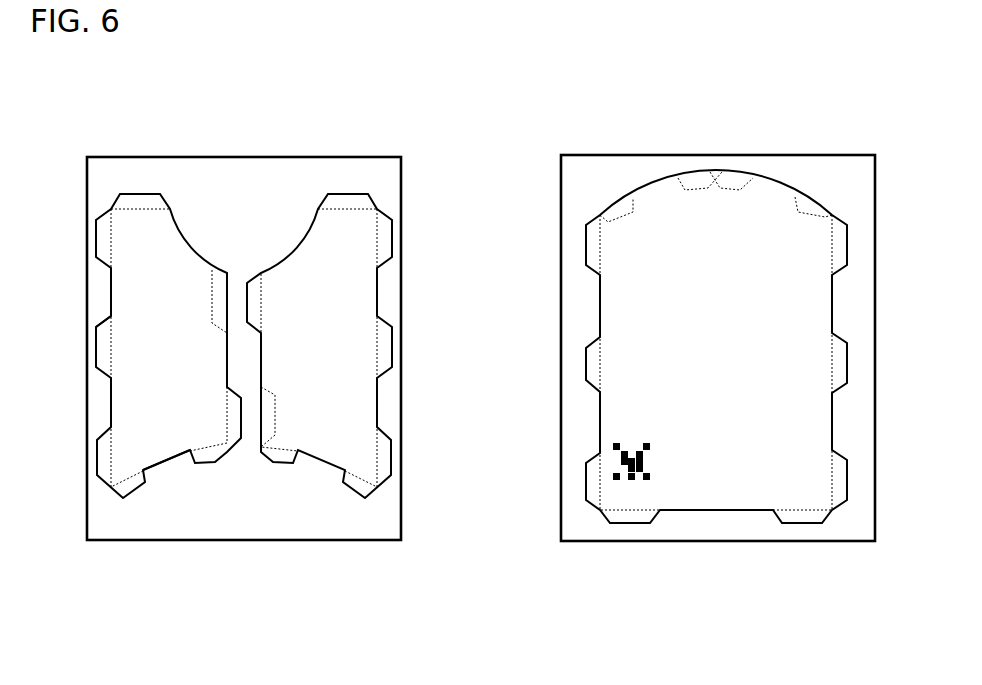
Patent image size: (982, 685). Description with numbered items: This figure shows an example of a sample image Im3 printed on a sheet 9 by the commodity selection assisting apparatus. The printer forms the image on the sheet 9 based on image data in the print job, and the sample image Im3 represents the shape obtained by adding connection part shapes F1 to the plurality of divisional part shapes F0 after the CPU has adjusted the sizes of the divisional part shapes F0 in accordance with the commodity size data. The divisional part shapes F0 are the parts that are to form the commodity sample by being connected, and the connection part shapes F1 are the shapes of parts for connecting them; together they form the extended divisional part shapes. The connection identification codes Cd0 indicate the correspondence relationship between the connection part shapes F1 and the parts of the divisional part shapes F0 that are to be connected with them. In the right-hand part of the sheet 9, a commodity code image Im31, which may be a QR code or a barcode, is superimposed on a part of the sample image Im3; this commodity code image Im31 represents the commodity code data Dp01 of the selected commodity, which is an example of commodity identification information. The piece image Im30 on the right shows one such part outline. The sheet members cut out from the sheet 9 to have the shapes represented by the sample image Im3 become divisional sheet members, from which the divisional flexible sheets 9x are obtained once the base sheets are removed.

The sample image Im3 is at (105, 160).
The sheet 9 is at (358, 155).
The divisional flexible sheet 9x is at (363, 302).
The connection identification code Cd0 is at (212, 288).
The connection part shape F1 is at (96, 350).
The divisional part shape F0 is at (168, 458).
The piece image Im30 is at (793, 177).
The commodity code image Im31 is at (622, 437).
The commodity code data Dp01 is at (631, 461).